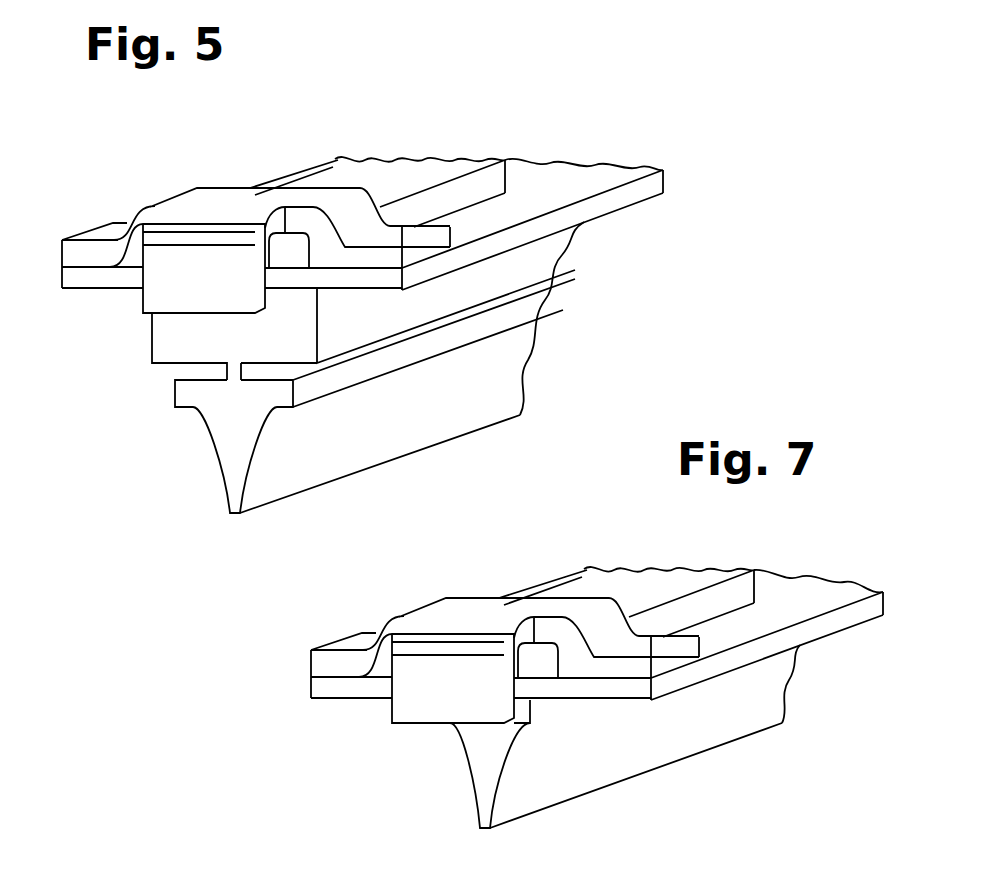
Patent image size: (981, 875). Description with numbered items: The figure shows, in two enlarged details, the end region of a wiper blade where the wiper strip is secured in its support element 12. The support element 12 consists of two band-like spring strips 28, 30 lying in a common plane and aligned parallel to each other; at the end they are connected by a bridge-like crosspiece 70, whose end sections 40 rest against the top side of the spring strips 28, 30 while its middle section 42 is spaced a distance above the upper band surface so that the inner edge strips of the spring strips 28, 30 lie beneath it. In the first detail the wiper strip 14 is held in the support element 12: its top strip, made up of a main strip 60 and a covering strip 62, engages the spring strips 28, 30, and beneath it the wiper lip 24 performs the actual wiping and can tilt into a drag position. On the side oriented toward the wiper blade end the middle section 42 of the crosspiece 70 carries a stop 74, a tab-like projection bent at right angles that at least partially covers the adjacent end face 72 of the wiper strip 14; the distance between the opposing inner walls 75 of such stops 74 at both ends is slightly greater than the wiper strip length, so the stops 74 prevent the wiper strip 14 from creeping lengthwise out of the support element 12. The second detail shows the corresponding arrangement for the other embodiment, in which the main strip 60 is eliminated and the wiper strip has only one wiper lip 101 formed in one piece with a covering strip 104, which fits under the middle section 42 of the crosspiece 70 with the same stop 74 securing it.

In FIG. 5, the support element 12 is at (610, 238).
In FIG. 7, the support element 12 is at (698, 673).
In FIG. 5, the wiper strip 14 is at (147, 362).
In FIG. 5, the wiper lip 24 is at (232, 422).
In FIG. 5, the spring strip 28 is at (292, 170).
In FIG. 7, the spring strip 28 is at (446, 631).
In FIG. 5, the spring strip 30 is at (645, 185).
In FIG. 7, the spring strip 30 is at (781, 636).
In FIG. 5, the end section 40 is at (107, 237).
In FIG. 5, the middle section 42 is at (213, 200).
In FIG. 5, the main strip 60 is at (573, 253).
In FIG. 5, the covering strip 62 is at (424, 175).
In FIG. 5, the crosspiece 70 is at (167, 190).
In FIG. 7, the crosspiece 70 is at (529, 577).
In FIG. 5, the end face 72 is at (193, 315).
In FIG. 7, the end face 72 is at (464, 775).
In FIG. 5, the stop 74 is at (173, 283).
In FIG. 7, the stop 74 is at (438, 712).
In FIG. 5, the inner wall 75 is at (270, 295).
In FIG. 7, the inner wall 75 is at (574, 730).
In FIG. 7, the wiper lip 101 is at (645, 736).
In FIG. 7, the covering strip 104 is at (669, 566).